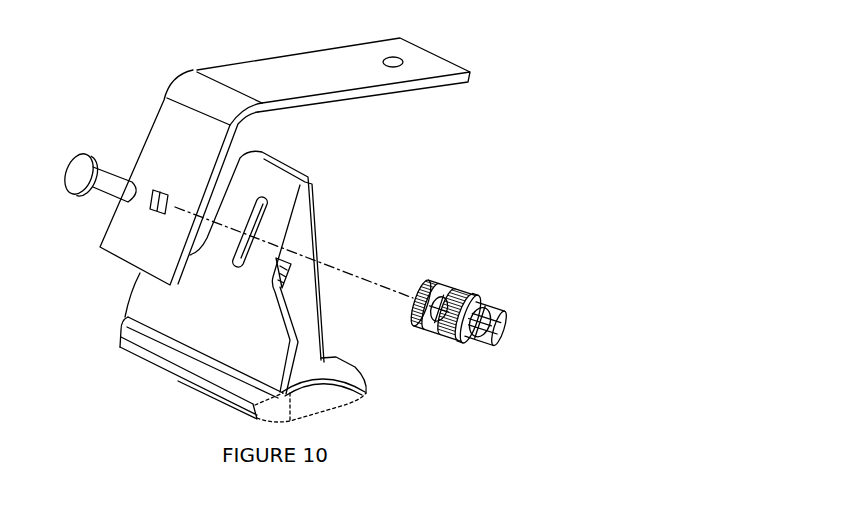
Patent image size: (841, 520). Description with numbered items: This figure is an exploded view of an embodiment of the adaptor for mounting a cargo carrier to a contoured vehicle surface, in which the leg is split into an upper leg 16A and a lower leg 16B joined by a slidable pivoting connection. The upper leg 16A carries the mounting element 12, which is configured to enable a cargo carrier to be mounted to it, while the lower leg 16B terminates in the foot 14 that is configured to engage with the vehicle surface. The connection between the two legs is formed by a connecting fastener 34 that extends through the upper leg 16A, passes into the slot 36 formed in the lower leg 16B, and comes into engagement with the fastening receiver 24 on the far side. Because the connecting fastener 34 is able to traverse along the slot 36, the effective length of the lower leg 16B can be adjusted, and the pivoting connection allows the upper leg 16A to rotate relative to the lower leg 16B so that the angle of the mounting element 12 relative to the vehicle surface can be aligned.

The mounting element 12 is at (380, 49).
The foot 14 is at (333, 405).
The upper leg 16A is at (163, 132).
The lower leg 16B is at (138, 300).
The fastening receiver 24 is at (486, 302).
The connecting fastener 34 is at (103, 192).
The slot 36 is at (257, 222).